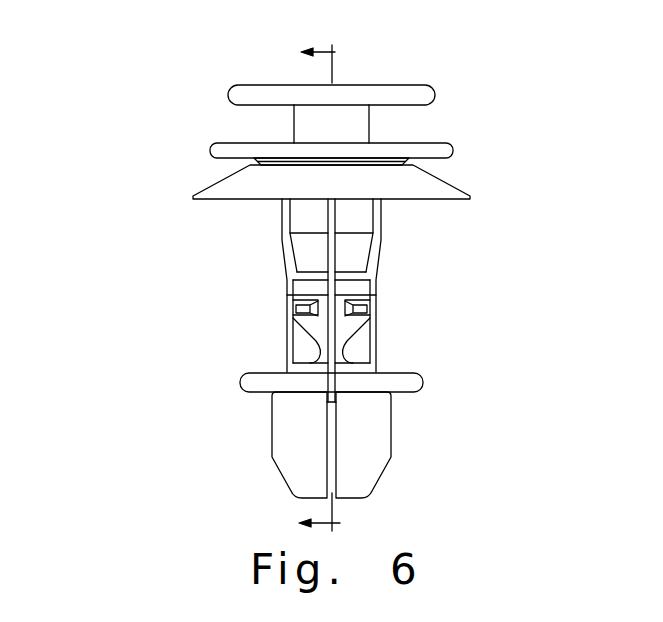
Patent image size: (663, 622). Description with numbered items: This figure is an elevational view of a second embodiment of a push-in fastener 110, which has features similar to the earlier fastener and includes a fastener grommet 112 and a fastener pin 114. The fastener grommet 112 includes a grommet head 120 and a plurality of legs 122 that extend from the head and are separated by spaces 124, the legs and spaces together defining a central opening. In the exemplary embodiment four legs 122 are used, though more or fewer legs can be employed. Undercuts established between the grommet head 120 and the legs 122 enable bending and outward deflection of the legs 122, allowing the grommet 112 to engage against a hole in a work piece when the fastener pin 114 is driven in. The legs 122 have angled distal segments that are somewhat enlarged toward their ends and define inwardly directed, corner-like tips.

The fastener 110 is at (290, 289).
The fastener grommet 112 is at (354, 414).
The fastener pin 114 is at (404, 264).
The grommet head 120 is at (253, 375).
The legs 122 is at (290, 468).
The spaces 124 is at (328, 442).